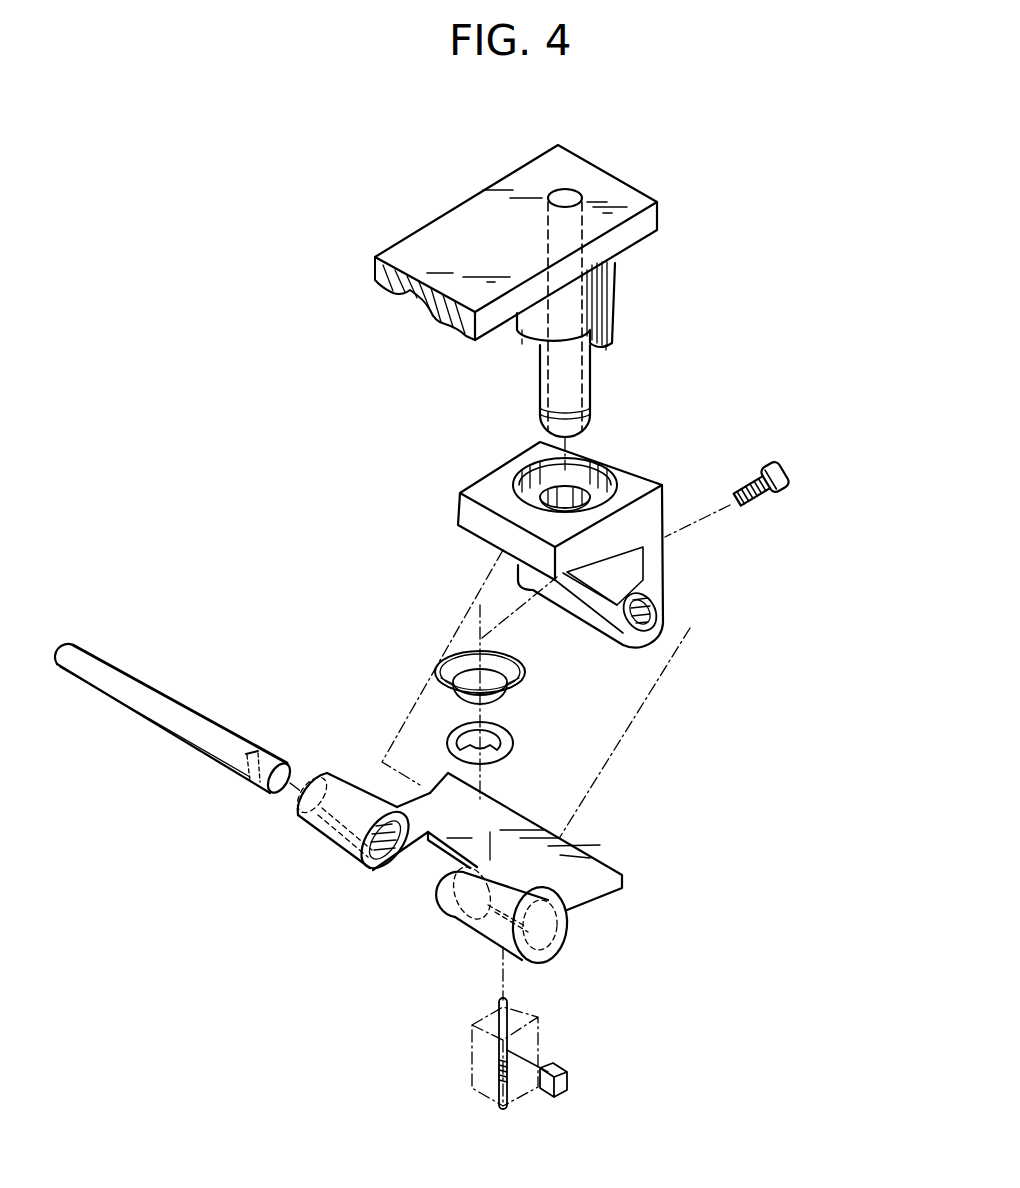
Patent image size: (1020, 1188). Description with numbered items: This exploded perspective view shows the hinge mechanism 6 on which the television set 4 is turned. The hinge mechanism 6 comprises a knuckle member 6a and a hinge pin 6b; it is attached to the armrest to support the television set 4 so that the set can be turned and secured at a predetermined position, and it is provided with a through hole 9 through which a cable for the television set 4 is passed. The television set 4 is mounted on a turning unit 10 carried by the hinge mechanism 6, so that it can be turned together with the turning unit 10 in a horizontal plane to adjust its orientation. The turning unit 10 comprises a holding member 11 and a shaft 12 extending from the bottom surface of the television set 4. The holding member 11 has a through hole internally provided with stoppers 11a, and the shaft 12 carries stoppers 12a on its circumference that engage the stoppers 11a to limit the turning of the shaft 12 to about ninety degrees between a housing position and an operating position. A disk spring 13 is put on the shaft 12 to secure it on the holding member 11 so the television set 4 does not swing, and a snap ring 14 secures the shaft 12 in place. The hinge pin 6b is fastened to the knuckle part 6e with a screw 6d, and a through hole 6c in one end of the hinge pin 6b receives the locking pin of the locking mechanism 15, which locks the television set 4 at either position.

The television set 4 is at (457, 220).
The through hole 9 is at (568, 193).
The shaft 12 is at (540, 393).
The stoppers 12a is at (592, 347).
The turning unit 10 is at (474, 437).
The holding member 11 is at (605, 470).
The stoppers 11a is at (640, 487).
The screw 6d is at (776, 462).
The knuckle part 6e is at (665, 567).
The disk spring 13 is at (445, 662).
The snap ring 14 is at (455, 740).
The hinge pin 6b is at (145, 723).
The through hole 6c is at (250, 754).
The hinge mechanism 6 is at (693, 725).
The knuckle member 6a is at (580, 903).
The locking mechanism 15 is at (588, 1050).